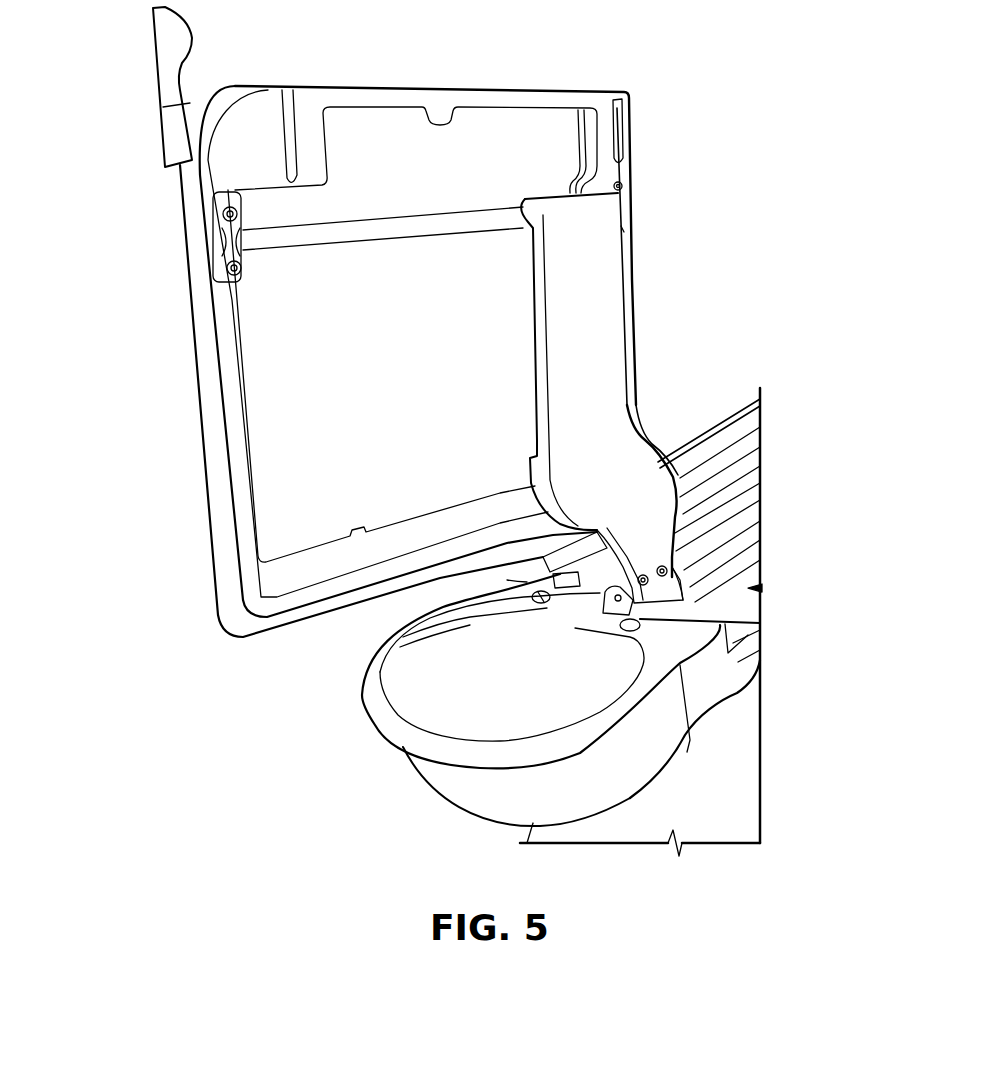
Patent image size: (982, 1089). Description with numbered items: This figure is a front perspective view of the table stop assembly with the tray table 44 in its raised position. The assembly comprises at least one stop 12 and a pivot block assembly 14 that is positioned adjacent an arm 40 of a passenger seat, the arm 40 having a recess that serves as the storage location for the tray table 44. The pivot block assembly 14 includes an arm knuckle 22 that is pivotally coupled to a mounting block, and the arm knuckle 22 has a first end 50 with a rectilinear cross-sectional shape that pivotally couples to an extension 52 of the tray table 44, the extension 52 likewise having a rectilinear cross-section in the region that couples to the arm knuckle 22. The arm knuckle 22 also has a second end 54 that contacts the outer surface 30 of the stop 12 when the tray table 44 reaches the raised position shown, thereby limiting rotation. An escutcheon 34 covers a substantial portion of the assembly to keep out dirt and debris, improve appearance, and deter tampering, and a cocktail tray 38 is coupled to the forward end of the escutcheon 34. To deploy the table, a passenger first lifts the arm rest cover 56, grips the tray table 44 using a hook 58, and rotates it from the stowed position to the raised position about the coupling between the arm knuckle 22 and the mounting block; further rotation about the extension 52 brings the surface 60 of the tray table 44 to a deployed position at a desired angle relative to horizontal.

The stop 12 is at (400, 647).
The pivot block assembly 14 is at (560, 584).
The arm knuckle 22 is at (723, 582).
The outer surface 30 is at (533, 600).
The escutcheon 34 is at (520, 583).
The cocktail tray 38 is at (585, 696).
The arm 40 is at (650, 550).
The tray table 44 is at (212, 385).
The first end 50 is at (700, 582).
The extension 52 is at (683, 517).
The second end 54 is at (720, 624).
The arm rest cover 56 is at (730, 443).
The hook 58 is at (163, 110).
The surface 60 is at (200, 467).